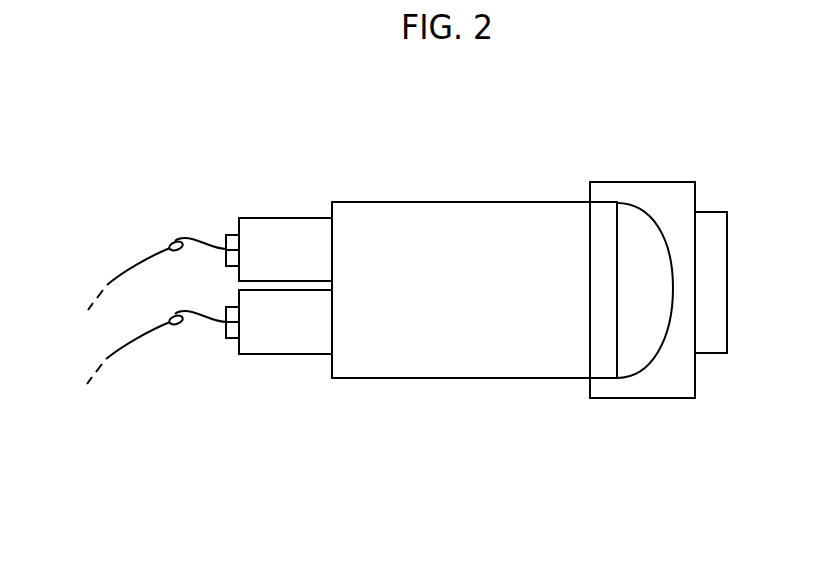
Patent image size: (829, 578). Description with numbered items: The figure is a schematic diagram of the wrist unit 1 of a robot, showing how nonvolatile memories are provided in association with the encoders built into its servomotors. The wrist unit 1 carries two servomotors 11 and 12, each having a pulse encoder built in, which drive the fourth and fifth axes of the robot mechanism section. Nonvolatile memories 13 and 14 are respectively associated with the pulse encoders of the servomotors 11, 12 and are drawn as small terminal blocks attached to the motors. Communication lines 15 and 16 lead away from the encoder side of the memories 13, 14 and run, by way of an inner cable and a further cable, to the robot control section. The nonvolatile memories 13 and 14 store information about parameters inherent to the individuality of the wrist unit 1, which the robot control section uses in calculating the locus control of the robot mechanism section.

The wrist unit 1 is at (477, 161).
The servomotor 11 is at (286, 218).
The servomotor 12 is at (290, 355).
The nonvolatile memory 13 is at (228, 268).
The nonvolatile memory 14 is at (228, 341).
The communication line 15 is at (118, 271).
The communication line 16 is at (122, 350).